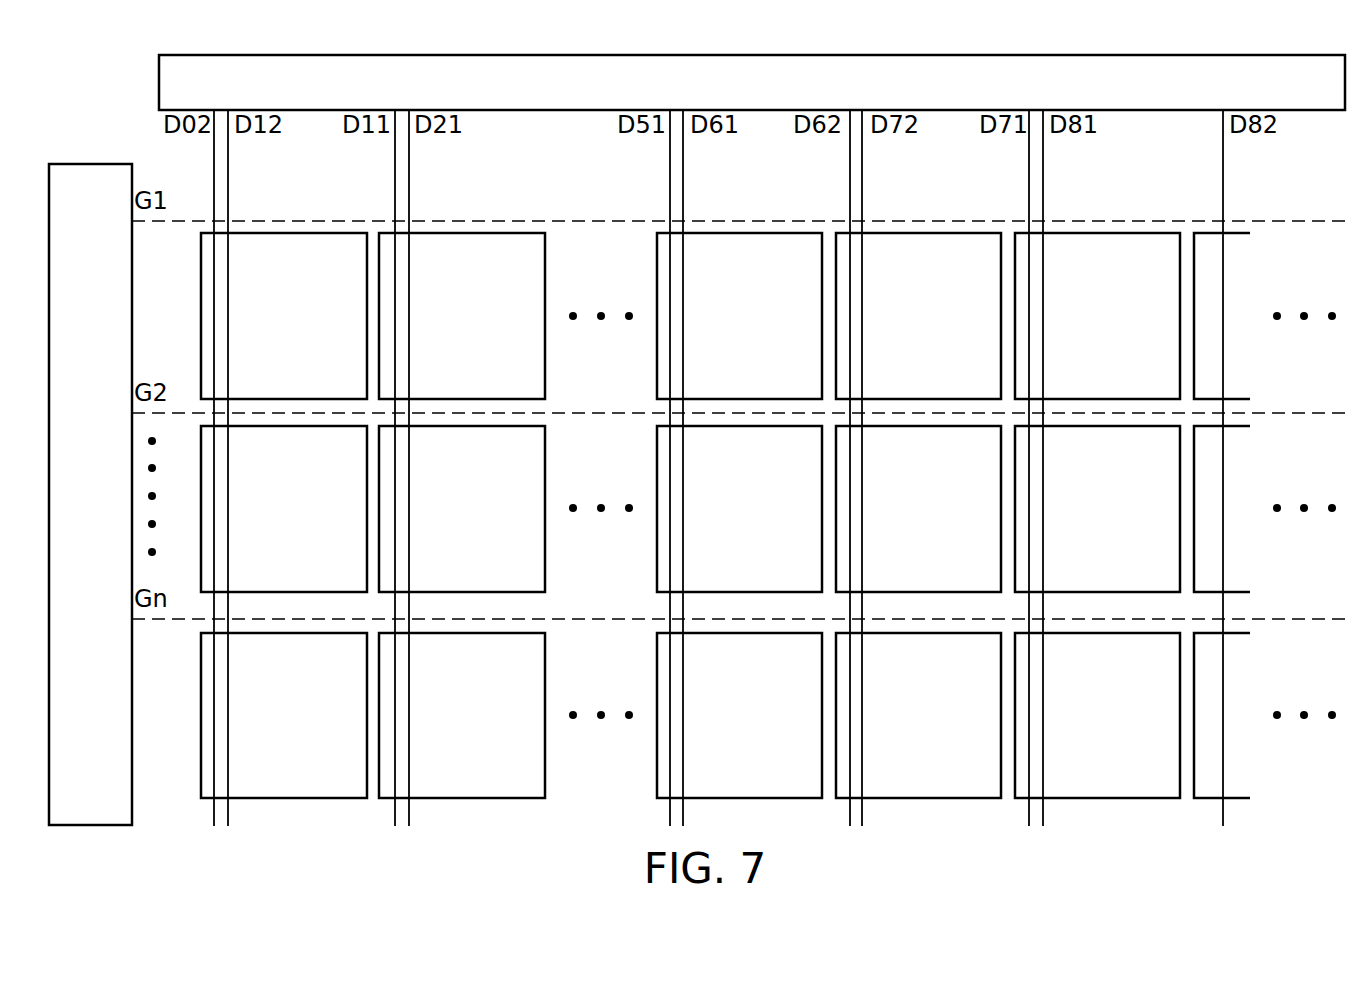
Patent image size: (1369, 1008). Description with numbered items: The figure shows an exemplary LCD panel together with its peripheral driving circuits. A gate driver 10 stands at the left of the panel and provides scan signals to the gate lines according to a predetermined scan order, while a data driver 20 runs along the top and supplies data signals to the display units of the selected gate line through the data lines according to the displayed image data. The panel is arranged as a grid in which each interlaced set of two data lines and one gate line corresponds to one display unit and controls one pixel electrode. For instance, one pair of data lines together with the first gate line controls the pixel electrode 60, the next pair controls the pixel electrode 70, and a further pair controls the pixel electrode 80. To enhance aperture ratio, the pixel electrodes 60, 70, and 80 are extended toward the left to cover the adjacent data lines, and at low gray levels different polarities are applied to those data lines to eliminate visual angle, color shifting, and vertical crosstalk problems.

The gate driver 10 is at (103, 164).
The data driver 20 is at (159, 80).
The pixel electrode 60 is at (765, 233).
The pixel electrode 70 is at (930, 233).
The pixel electrode 80 is at (1110, 233).